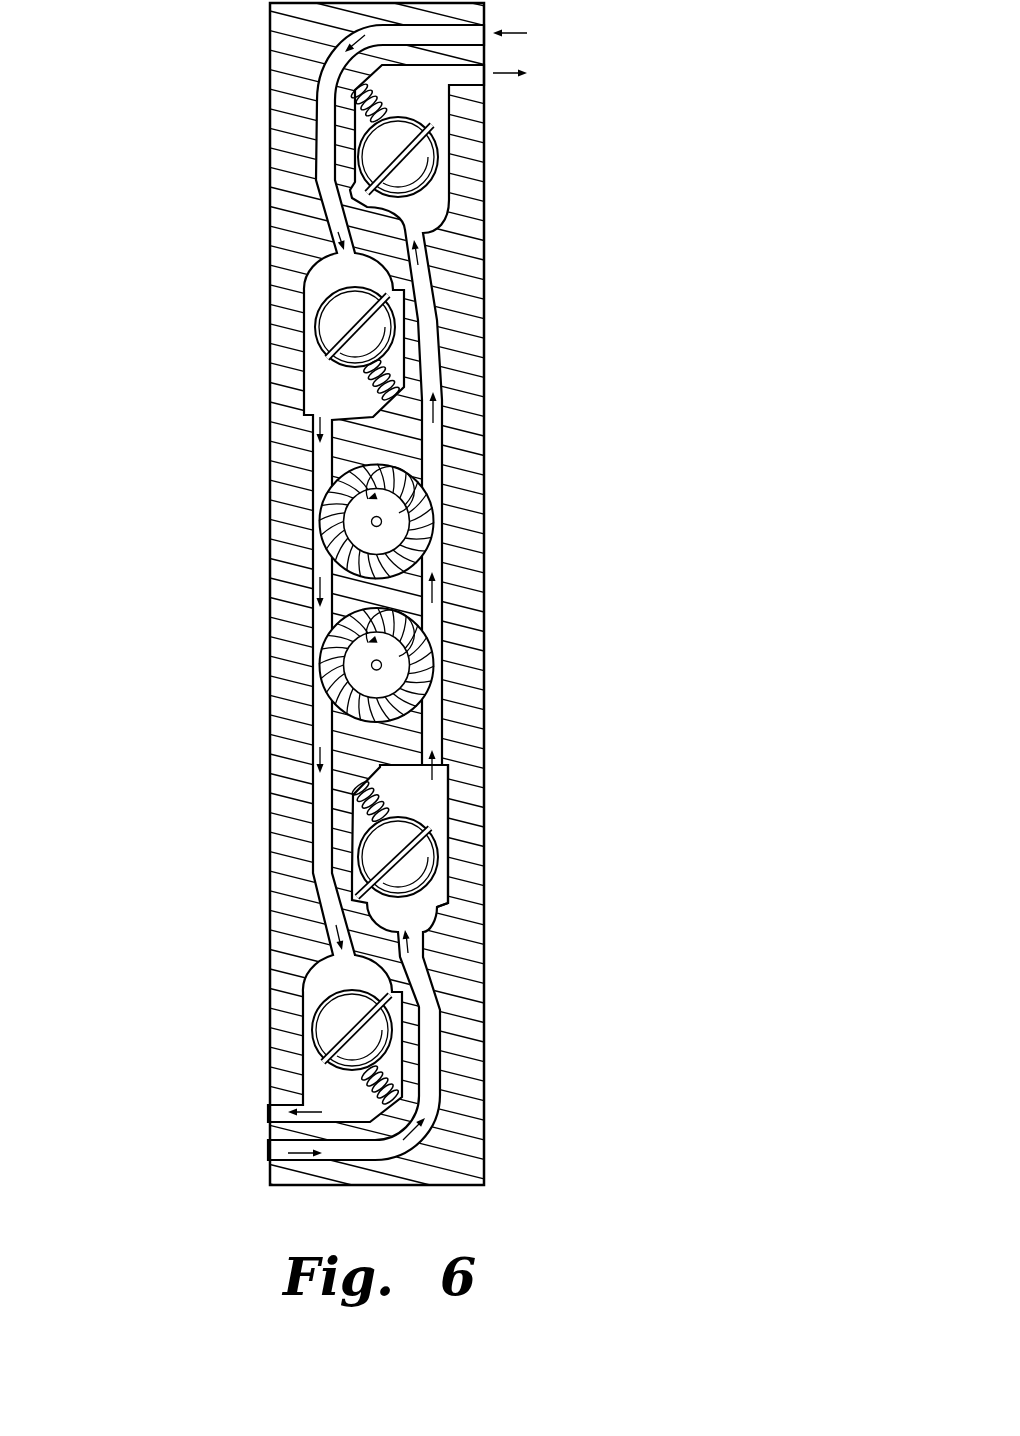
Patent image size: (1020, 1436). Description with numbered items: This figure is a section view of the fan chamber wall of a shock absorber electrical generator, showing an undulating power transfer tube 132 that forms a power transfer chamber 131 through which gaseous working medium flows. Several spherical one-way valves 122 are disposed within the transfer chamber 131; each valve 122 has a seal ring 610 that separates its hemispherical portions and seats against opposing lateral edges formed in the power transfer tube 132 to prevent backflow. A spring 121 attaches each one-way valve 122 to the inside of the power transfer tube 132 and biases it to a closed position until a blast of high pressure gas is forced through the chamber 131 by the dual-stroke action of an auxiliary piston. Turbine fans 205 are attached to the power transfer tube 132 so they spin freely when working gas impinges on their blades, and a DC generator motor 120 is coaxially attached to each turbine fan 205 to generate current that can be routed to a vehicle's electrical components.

The power transfer tube 132 is at (270, 430).
The power transfer chamber 131 is at (261, 1150).
The turbine fan 205 is at (410, 615).
The DC generator motor 120 is at (403, 670).
The spring 121 is at (380, 793).
The seal ring 610 is at (440, 820).
The one-way valve 122 is at (428, 883).